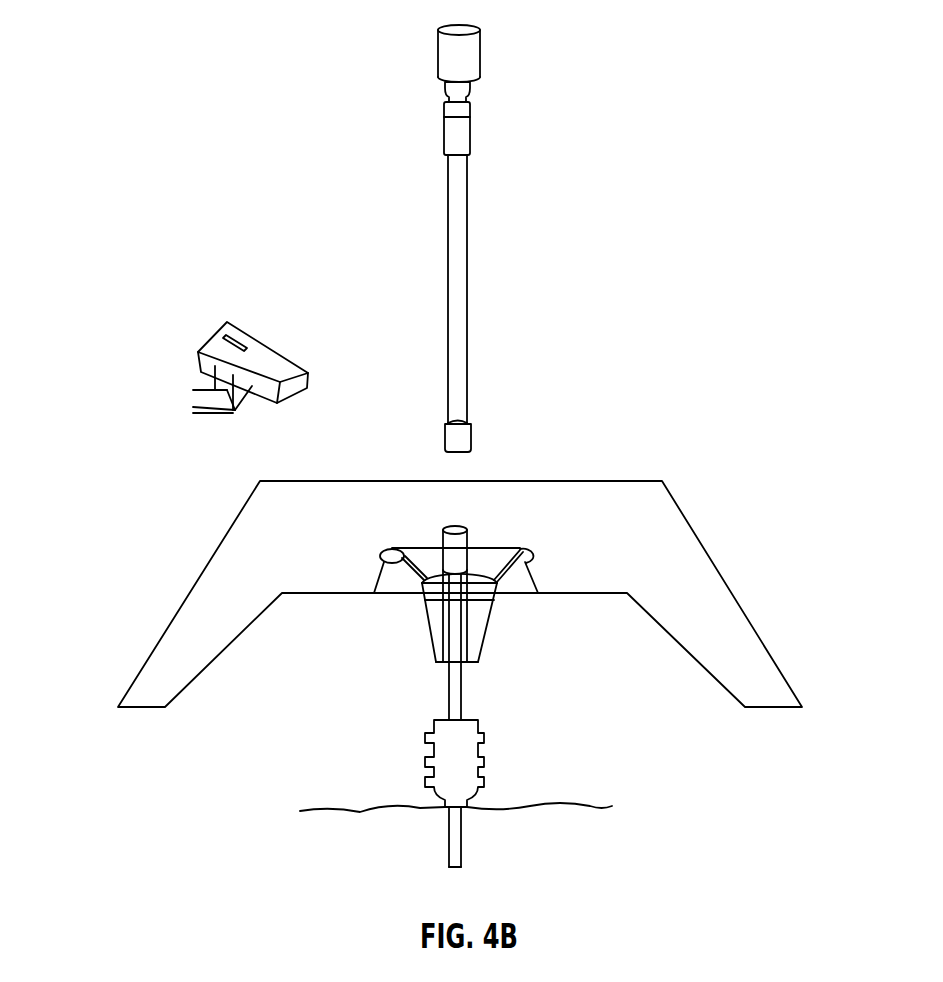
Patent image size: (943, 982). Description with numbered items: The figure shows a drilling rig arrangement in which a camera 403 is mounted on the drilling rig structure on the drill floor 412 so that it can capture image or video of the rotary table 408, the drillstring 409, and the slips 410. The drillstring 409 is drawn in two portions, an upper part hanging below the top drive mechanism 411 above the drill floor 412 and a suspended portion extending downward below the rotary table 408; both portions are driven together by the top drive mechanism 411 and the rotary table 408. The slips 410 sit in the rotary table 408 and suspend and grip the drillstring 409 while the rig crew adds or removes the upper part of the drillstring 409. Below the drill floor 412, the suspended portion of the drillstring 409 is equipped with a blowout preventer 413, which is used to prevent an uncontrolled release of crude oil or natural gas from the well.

The camera 403 is at (204, 311).
The rotary table 408 is at (482, 551).
The drillstring 409 is at (468, 272).
The slips 410 is at (497, 612).
The top drive mechanism 411 is at (482, 71).
The drill floor 412 is at (274, 543).
The blowout preventer 413 is at (418, 769).